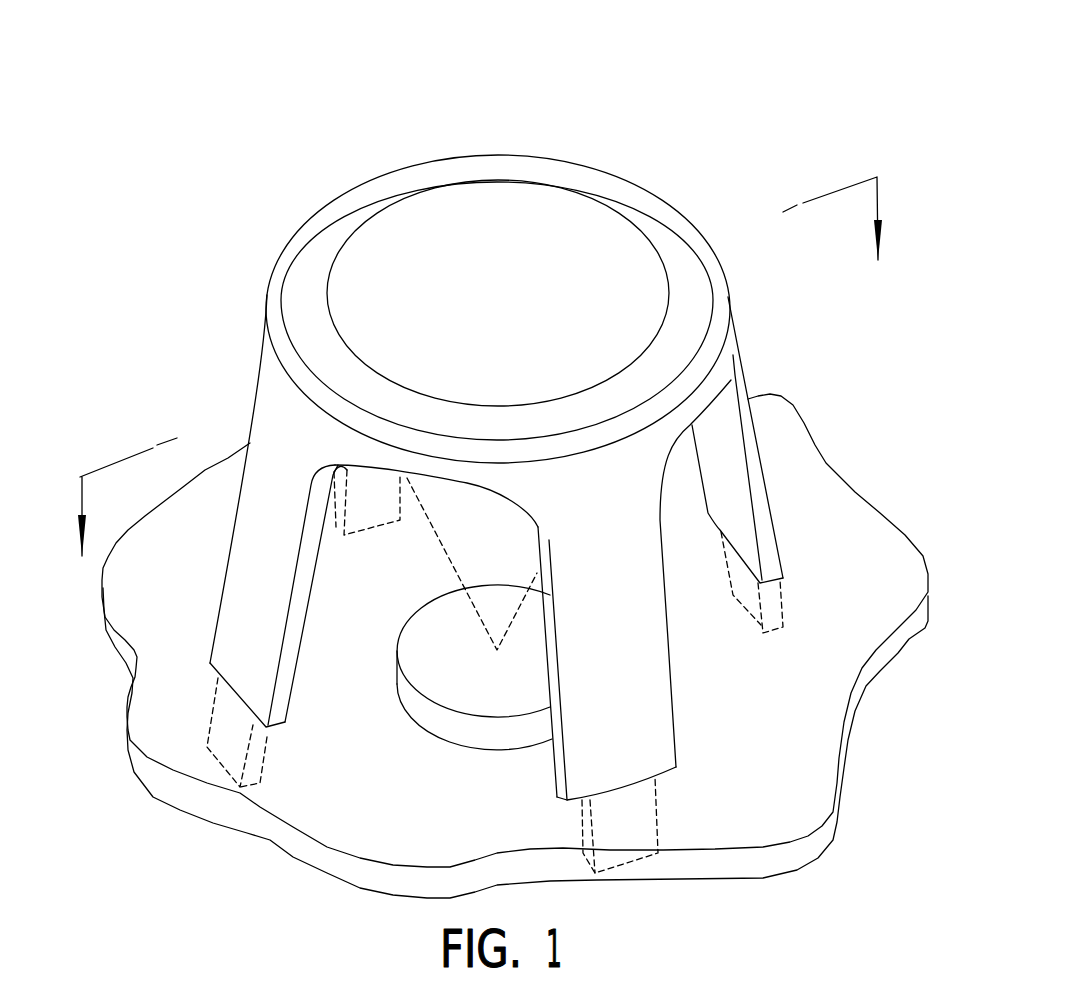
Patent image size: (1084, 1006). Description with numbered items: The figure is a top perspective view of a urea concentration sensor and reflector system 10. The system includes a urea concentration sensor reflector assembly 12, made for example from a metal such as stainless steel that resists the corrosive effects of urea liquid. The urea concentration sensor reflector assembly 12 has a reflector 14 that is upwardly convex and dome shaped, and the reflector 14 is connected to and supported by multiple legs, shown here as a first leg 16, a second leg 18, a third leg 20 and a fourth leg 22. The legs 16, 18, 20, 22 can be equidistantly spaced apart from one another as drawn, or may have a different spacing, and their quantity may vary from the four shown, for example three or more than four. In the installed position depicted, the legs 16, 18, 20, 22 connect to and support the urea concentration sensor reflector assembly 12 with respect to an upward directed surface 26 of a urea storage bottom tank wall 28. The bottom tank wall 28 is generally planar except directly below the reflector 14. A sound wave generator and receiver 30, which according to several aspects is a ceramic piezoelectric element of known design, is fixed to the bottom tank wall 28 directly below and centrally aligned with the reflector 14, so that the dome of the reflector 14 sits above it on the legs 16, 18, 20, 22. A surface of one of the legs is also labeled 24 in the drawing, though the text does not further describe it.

The urea concentration sensor and reflector system 10 is at (501, 465).
The urea concentration sensor reflector assembly 12 is at (633, 173).
The reflector 14 is at (430, 225).
The first leg 16 is at (253, 598).
The second leg 18 is at (363, 507).
The third leg 20 is at (740, 411).
The fourth leg 22 is at (646, 626).
The leg outer surface 24 is at (667, 660).
The upward directed surface 26 is at (281, 804).
The urea storage bottom tank wall 28 is at (529, 646).
The sound wave generator and receiver 30 is at (447, 723).